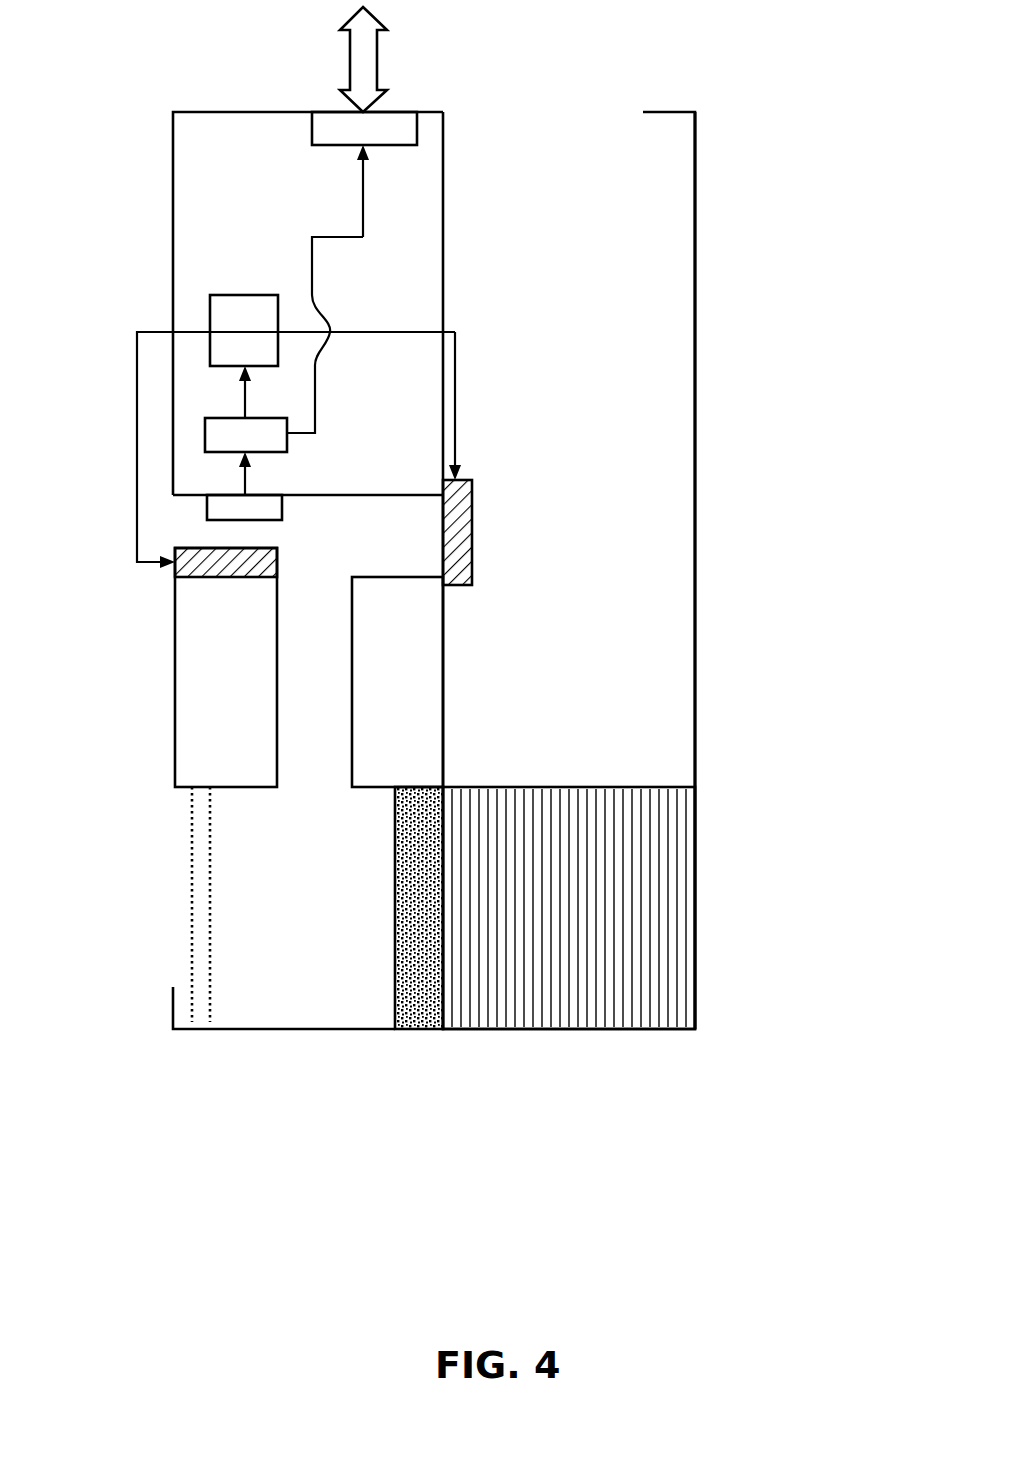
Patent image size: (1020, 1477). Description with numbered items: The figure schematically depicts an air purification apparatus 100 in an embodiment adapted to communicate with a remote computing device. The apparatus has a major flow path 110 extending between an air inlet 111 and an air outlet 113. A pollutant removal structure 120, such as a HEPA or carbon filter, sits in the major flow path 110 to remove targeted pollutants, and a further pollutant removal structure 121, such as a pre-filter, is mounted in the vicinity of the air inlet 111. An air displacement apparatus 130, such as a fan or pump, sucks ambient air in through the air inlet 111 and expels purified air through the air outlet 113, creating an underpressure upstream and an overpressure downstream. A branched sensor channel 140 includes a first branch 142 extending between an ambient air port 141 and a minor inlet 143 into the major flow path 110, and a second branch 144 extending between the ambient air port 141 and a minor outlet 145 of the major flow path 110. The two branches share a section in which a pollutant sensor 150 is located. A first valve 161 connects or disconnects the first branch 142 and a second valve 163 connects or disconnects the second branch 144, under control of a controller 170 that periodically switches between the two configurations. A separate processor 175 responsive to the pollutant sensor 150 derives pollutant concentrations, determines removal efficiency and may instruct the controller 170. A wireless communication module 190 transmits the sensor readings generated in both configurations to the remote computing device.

The air purification apparatus 100 is at (474, 1172).
The major flow path 110 is at (648, 404).
The air inlet 111 is at (167, 900).
The air outlet 113 is at (545, 115).
The pollutant removal structure 120 is at (413, 1012).
The further pollutant removal structure 121 is at (205, 1020).
The air displacement apparatus 130 is at (685, 920).
The branched sensor channel 140 is at (327, 673).
The ambient air port 141 is at (175, 530).
The first branch 142 is at (332, 763).
The minor inlet 143 is at (312, 785).
The second branch 144 is at (384, 510).
The minor outlet 145 is at (433, 550).
The pollutant sensor 150 is at (228, 507).
The first valve 161 is at (230, 577).
The second valve 163 is at (472, 507).
The controller 170 is at (222, 315).
The processor 175 is at (205, 427).
The wireless communication module 190 is at (398, 125).